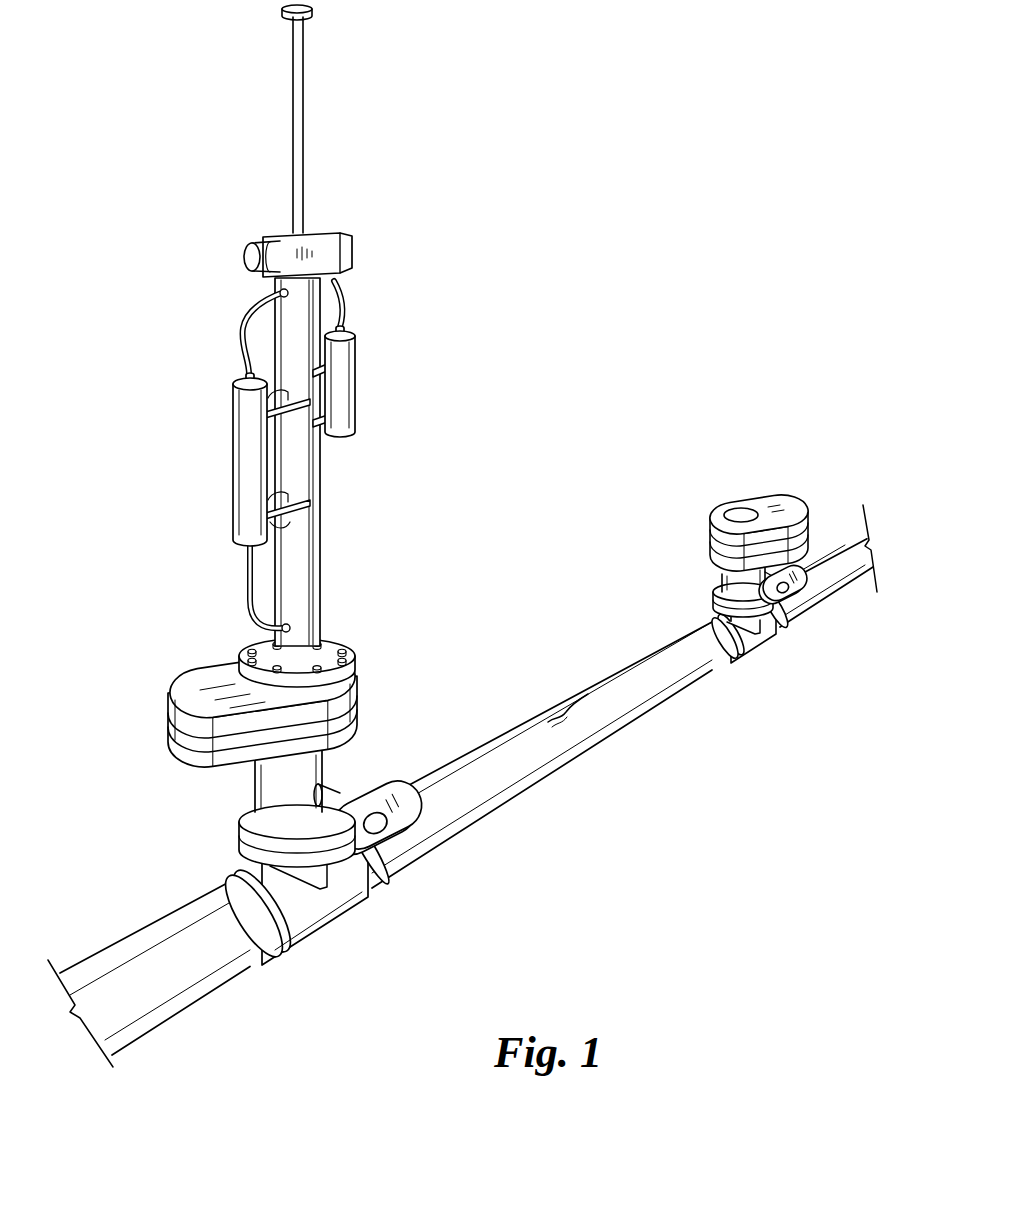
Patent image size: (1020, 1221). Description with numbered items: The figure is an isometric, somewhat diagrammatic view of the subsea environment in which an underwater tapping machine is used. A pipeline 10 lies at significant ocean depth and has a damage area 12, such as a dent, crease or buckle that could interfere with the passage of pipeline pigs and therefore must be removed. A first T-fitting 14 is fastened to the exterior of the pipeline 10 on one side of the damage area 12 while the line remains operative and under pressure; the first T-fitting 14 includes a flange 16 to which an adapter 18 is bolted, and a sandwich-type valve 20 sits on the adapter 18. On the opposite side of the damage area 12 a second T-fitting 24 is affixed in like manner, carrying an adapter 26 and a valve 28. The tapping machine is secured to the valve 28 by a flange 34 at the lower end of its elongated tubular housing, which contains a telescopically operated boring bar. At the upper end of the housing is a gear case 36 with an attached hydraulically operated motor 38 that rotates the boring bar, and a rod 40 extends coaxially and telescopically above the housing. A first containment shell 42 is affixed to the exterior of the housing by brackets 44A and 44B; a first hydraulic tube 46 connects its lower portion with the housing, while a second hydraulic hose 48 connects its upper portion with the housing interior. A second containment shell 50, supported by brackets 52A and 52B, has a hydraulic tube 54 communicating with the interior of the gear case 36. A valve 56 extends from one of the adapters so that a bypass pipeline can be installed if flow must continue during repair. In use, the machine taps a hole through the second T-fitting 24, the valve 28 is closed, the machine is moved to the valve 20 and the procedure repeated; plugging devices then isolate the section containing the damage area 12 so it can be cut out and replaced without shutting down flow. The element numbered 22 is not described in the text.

The pipeline 10 is at (622, 713).
The damage area 12 is at (558, 712).
The first T-fitting 14 is at (757, 640).
The flange 16 is at (713, 602).
The adapter 18 is at (725, 572).
The valve 20 is at (772, 500).
The aperture 22 is at (745, 510).
The second T-fitting 24 is at (330, 912).
The adapter 26 is at (268, 787).
The valve 28 is at (360, 694).
The flange 34 is at (322, 668).
The gear case 36 is at (325, 241).
The motor 38 is at (257, 251).
The rod 40 is at (298, 116).
The first containment shell 42 is at (247, 467).
The bracket 44A is at (272, 396).
The bracket 44B is at (233, 538).
The first hydraulic tube 46 is at (247, 593).
The second hydraulic hose 48 is at (236, 322).
The second containment shell 50 is at (346, 386).
The bracket 52A is at (355, 419).
The bracket 52B is at (355, 343).
The hydraulic tube 54 is at (340, 300).
The valve 56 is at (398, 818).